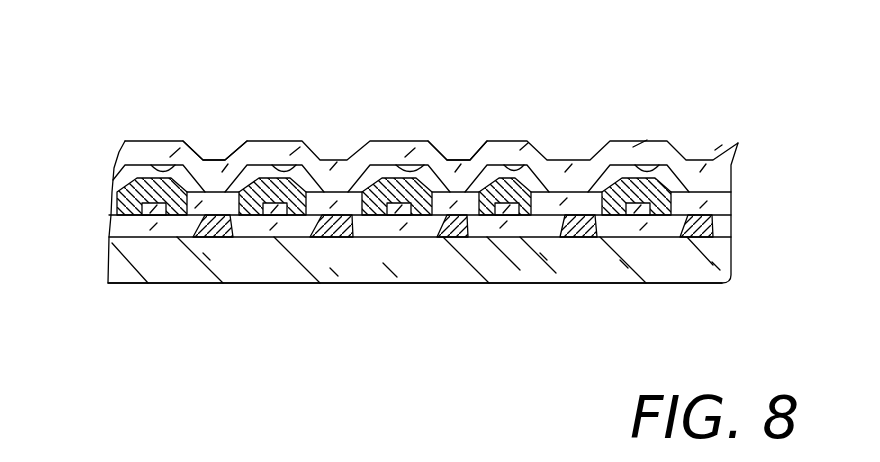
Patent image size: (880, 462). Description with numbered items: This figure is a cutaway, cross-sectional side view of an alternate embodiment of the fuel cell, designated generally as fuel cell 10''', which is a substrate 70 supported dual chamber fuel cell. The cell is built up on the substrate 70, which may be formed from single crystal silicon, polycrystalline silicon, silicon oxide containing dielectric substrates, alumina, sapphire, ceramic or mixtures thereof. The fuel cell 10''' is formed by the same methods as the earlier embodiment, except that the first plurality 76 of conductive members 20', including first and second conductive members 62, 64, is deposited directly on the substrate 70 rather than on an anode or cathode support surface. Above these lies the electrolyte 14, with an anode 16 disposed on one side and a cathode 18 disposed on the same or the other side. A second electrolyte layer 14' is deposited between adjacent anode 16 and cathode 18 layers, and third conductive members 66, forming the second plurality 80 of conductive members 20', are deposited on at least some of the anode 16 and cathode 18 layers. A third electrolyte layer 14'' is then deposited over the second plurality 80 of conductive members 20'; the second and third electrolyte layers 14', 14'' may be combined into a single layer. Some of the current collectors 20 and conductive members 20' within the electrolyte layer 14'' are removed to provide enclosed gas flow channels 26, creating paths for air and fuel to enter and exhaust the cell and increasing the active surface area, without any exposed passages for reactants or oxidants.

The fuel cell 10''' is at (401, 150).
The electrolyte 14 is at (462, 274).
The second electrolyte layer 14' is at (465, 197).
The third electrolyte layer 14'' is at (460, 148).
The anode 16 is at (292, 146).
The cathode 18 is at (139, 140).
The current collector 20 is at (396, 299).
The conductive member 20' is at (453, 305).
The gas flow channel 26 is at (196, 150).
The first conductive member 62 is at (387, 216).
The second conductive member 64 is at (507, 216).
The third conductive member 66 is at (461, 106).
The substrate 70 is at (683, 268).
The first plurality of conductive members 76 is at (440, 237).
The second plurality of conductive members 80 is at (670, 137).